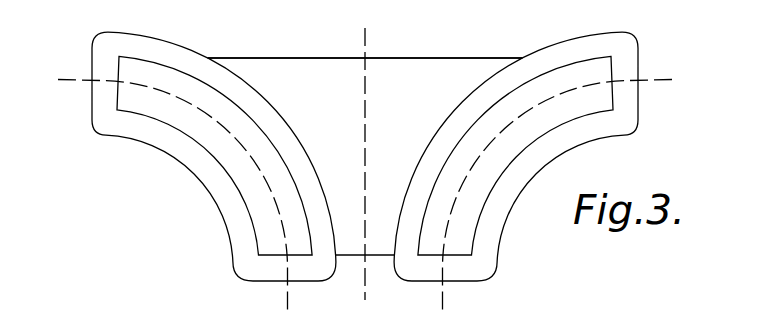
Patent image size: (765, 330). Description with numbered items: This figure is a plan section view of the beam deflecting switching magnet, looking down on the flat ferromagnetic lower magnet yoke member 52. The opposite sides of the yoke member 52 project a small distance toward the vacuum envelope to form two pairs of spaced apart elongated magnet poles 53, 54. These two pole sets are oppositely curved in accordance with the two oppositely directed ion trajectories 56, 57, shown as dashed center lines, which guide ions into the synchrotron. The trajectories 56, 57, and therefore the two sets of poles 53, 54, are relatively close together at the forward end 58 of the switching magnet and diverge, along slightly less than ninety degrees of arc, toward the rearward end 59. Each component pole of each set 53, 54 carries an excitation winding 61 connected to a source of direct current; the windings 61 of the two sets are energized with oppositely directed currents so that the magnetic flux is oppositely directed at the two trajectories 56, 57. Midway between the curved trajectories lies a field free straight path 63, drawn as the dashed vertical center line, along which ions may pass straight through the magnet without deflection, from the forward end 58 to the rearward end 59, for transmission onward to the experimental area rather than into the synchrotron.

The lower magnet yoke member 52 is at (334, 103).
The pair of magnet poles 53 is at (520, 155).
The pair of magnet poles 54 is at (193, 140).
The ion trajectory 56 is at (658, 77).
The ion trajectory 57 is at (56, 76).
The forward end 58 is at (347, 274).
The rearward end 59 is at (391, 49).
The excitation winding 61 is at (227, 222).
The field free straight path 63 is at (367, 117).